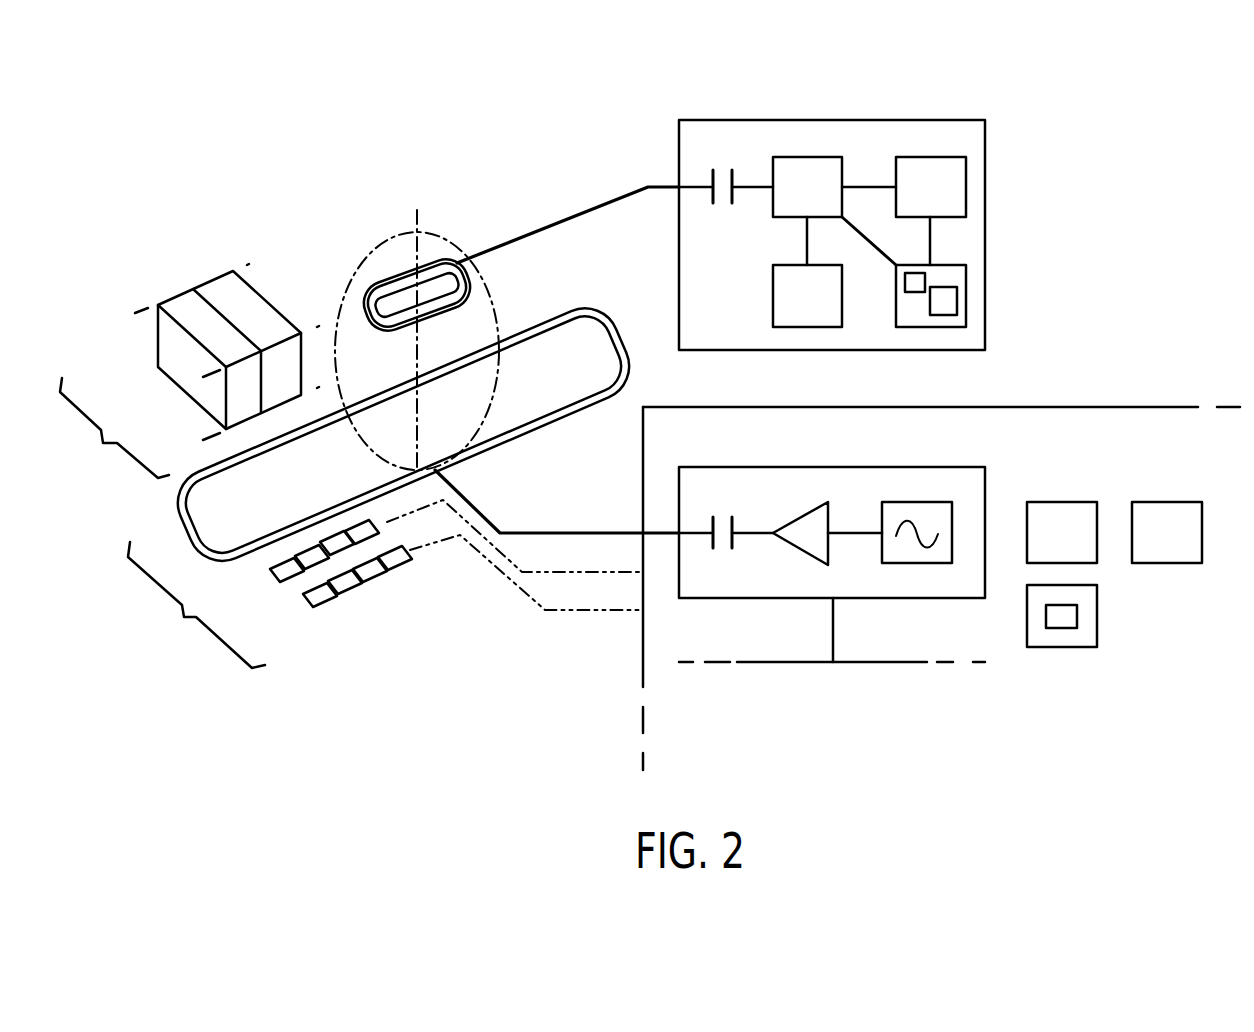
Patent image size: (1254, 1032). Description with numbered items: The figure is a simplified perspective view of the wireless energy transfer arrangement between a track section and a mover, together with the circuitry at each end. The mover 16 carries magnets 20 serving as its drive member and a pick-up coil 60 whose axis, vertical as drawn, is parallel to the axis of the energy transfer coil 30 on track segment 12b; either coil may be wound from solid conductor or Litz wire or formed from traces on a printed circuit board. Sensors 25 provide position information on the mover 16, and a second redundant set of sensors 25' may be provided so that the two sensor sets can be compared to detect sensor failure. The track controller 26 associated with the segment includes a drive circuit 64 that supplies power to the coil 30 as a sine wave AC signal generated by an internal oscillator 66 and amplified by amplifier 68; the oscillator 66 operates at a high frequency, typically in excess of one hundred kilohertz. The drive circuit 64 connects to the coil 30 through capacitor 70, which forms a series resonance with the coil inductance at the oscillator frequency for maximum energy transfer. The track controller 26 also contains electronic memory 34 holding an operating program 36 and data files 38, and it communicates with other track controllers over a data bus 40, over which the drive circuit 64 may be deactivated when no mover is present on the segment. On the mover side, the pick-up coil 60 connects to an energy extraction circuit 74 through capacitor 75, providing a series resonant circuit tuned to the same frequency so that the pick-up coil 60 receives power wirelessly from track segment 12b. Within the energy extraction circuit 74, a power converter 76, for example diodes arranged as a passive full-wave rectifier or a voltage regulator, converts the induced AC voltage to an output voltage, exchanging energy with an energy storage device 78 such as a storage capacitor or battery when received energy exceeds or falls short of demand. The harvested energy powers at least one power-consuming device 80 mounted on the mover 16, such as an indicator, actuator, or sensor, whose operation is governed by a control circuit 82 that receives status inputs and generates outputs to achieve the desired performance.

The track segment 12b is at (196, 605).
The mover 16 is at (114, 428).
The magnets 20 is at (184, 281).
The sensors 25 is at (286, 562).
The second redundant set of sensors 25' is at (317, 589).
The track controller 26 is at (642, 642).
The energy transfer coil 30 is at (607, 333).
The electronic memory 34 is at (1098, 613).
The operating program 36 is at (1062, 502).
The data files 38 is at (1077, 617).
The data bus 40 is at (803, 662).
The pick-up coil 60 is at (385, 277).
The drive circuit 64 is at (832, 547).
The oscillator 66 is at (917, 563).
The amplifier 68 is at (800, 553).
The capacitor 70 is at (713, 547).
The energy extraction circuit 74 is at (869, 214).
The capacitor 75 is at (735, 178).
The power converter 76 is at (806, 157).
The energy storage device 78 is at (773, 295).
The power-consuming device 80 is at (966, 185).
The control circuit 82 is at (966, 295).